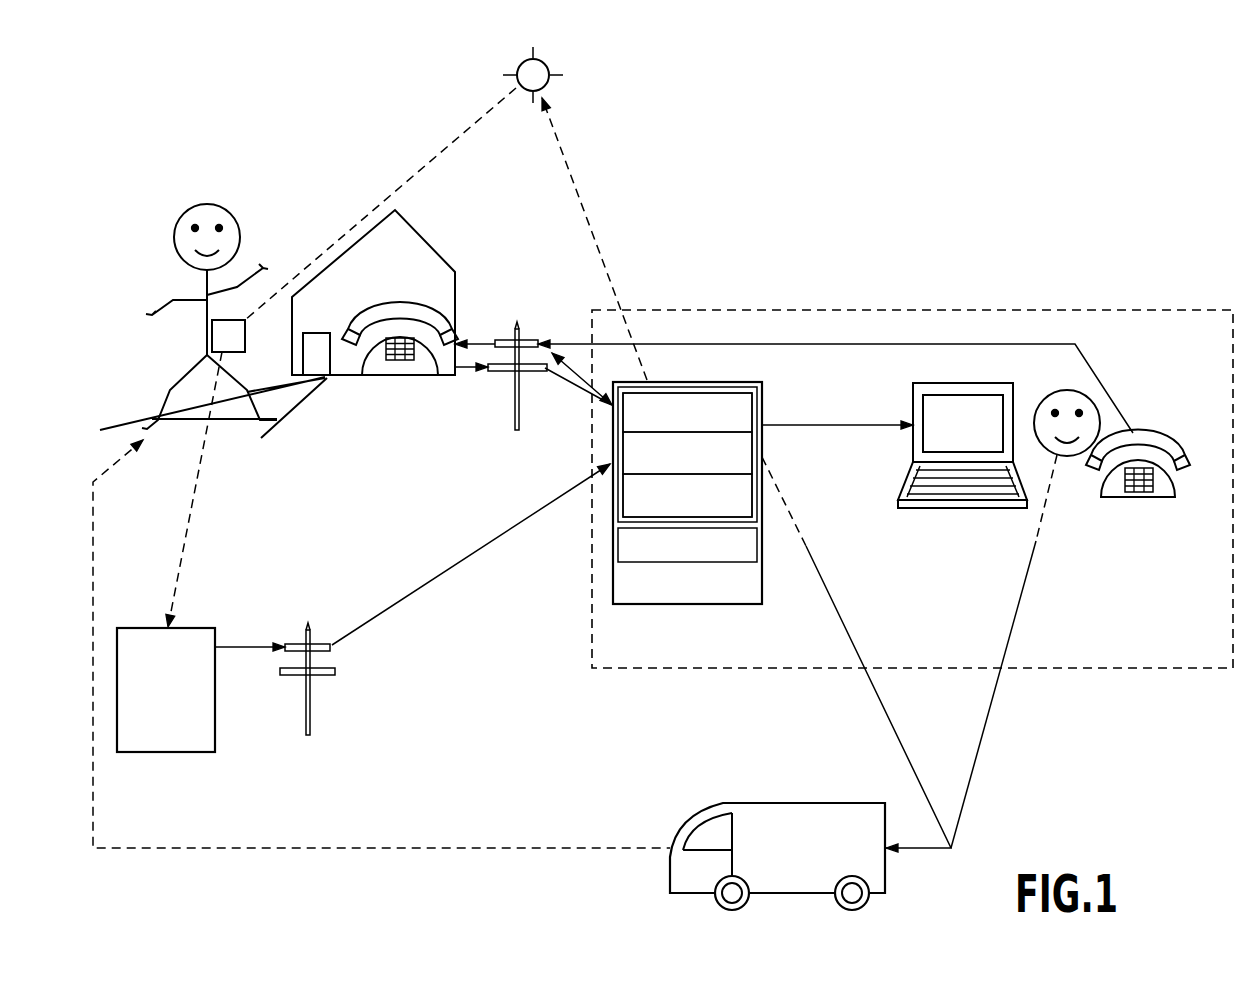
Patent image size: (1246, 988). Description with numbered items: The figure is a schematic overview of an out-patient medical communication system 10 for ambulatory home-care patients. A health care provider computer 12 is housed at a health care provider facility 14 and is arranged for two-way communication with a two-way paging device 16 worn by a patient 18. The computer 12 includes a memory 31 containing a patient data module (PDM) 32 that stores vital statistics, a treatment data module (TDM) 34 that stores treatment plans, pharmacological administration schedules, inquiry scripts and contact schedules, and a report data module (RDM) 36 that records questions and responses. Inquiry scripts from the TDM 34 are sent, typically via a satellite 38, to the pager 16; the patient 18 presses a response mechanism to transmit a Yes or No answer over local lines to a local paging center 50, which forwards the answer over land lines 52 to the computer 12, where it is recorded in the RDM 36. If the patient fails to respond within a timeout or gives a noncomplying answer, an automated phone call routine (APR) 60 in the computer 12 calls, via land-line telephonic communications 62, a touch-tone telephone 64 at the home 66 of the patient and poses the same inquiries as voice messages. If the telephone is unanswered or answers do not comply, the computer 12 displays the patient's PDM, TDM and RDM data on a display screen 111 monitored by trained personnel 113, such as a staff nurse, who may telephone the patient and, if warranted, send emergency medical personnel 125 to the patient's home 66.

The out-patient medical communication system 10 is at (850, 187).
The health care provider computer 12 is at (651, 477).
The health care provider facility 14 is at (1073, 310).
The two-way paging device 16 is at (222, 332).
The patient 18 is at (170, 258).
The memory 31 is at (618, 528).
The patient data module (PDM) 32 is at (632, 410).
The treatment data module (TDM) 34 is at (632, 440).
The report data module (RDM) 36 is at (632, 494).
The satellite 38 is at (523, 65).
The local paging center 50 is at (205, 628).
The land lines 52 is at (310, 630).
The automated phone call routine (APR) 60 is at (632, 548).
The land-line telephonic communications 62 is at (517, 327).
The touch-tone telephone 64 is at (375, 360).
The home 66 is at (432, 240).
The display screen 111 is at (963, 382).
The trained personnel 113 is at (1083, 393).
The emergency medical personnel 125 is at (820, 783).